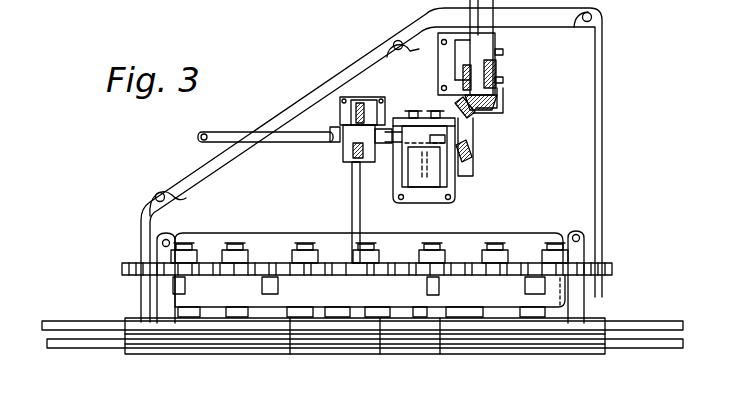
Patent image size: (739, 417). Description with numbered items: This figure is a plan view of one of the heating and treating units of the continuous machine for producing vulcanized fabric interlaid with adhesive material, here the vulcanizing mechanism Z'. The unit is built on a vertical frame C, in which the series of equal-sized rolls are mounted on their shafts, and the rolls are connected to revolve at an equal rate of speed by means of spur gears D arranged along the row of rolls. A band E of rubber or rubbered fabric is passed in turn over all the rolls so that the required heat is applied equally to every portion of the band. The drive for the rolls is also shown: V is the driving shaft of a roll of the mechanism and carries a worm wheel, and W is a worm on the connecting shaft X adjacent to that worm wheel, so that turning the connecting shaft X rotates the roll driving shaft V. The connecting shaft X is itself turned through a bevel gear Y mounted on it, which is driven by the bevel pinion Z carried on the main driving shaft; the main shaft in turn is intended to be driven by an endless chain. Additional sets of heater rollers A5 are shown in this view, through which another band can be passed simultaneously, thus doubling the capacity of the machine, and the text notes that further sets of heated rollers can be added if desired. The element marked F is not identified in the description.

The vulcanizing mechanism Z' is at (483, 47).
The bevel pinion Z is at (492, 128).
The bevel gear Y is at (455, 148).
The connecting shaft X is at (283, 141).
The worm W is at (343, 147).
The driving shaft V is at (352, 182).
The spur gears D is at (203, 266).
The vertical frame C is at (370, 304).
The band E is at (93, 330).
The sliding blocks F is at (207, 330).
The additional sets of heater rollers A5 is at (256, 352).